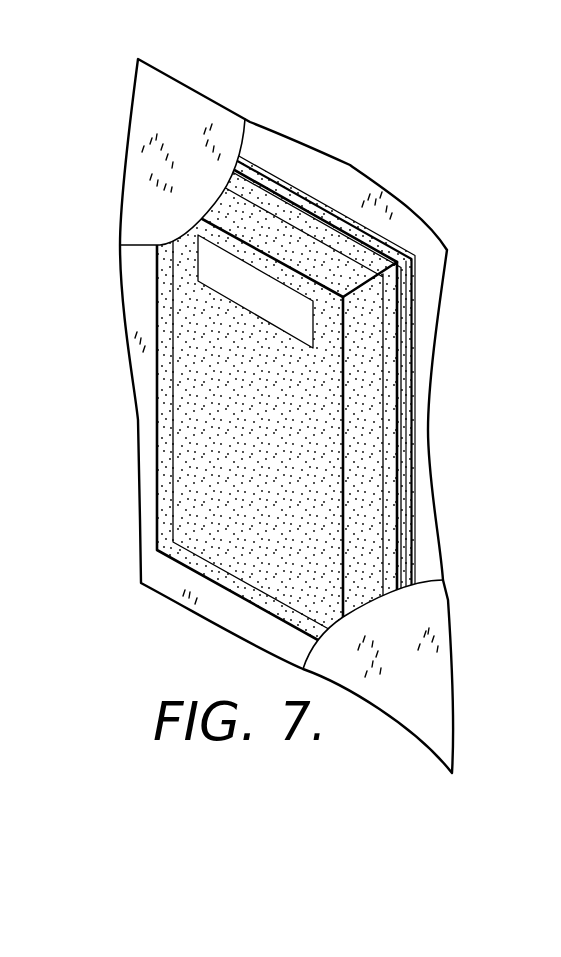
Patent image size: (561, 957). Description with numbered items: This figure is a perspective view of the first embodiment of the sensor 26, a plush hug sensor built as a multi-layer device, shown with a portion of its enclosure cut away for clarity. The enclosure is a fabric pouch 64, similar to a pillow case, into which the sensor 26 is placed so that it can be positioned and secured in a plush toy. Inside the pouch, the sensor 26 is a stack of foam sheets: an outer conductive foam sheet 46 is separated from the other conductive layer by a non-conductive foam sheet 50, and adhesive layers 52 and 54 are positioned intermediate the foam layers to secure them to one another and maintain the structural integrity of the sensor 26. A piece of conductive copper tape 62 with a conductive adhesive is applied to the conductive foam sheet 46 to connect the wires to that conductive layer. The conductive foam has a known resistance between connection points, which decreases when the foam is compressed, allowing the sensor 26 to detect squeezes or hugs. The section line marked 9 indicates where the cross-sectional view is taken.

The sensor 26 is at (356, 150).
The conductive foam sheet 46 is at (176, 527).
The conductive copper tape 62 is at (200, 277).
The adhesive layer 52 is at (399, 342).
The non-conductive foam sheet 50 is at (411, 397).
The adhesive layer 54 is at (414, 478).
The fabric pouch 64 is at (410, 716).
The section line 9-9 indicator 9 is at (247, 138).